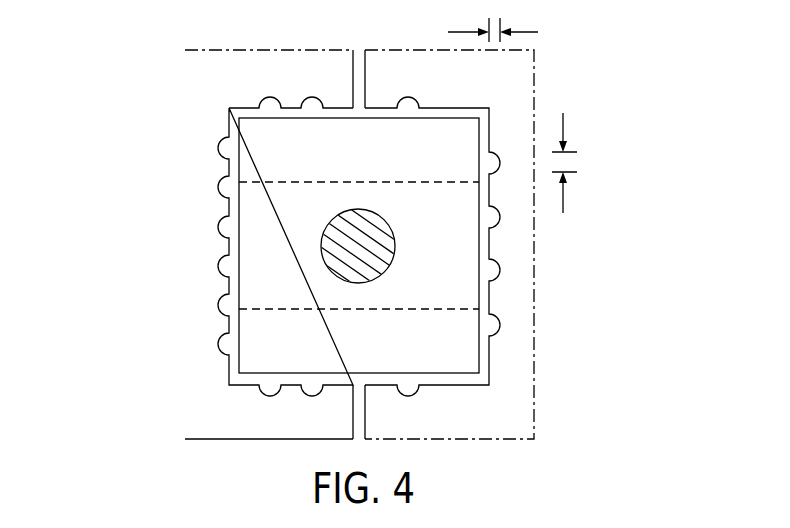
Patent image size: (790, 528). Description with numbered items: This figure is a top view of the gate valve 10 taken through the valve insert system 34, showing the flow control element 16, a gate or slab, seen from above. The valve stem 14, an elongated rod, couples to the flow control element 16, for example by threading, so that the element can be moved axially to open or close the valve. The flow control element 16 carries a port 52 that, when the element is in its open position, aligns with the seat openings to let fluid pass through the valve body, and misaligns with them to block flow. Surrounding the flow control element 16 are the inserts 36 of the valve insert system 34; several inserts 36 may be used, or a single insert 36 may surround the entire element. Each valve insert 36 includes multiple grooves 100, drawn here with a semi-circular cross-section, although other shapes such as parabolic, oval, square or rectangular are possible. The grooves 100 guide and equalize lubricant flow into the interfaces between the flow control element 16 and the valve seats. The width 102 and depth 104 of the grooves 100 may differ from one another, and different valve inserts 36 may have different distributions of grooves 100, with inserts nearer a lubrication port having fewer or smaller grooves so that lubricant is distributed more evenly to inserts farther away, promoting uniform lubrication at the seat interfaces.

The gate valve 10 is at (380, 219).
The valve stem 14 is at (338, 270).
The flow control element 16 is at (372, 162).
The valve insert system 34 is at (138, 150).
The valve inserts 36 is at (220, 424).
The port 52 is at (449, 259).
The grooves 100 is at (222, 268).
The width 102 is at (563, 198).
The depth 104 is at (525, 28).